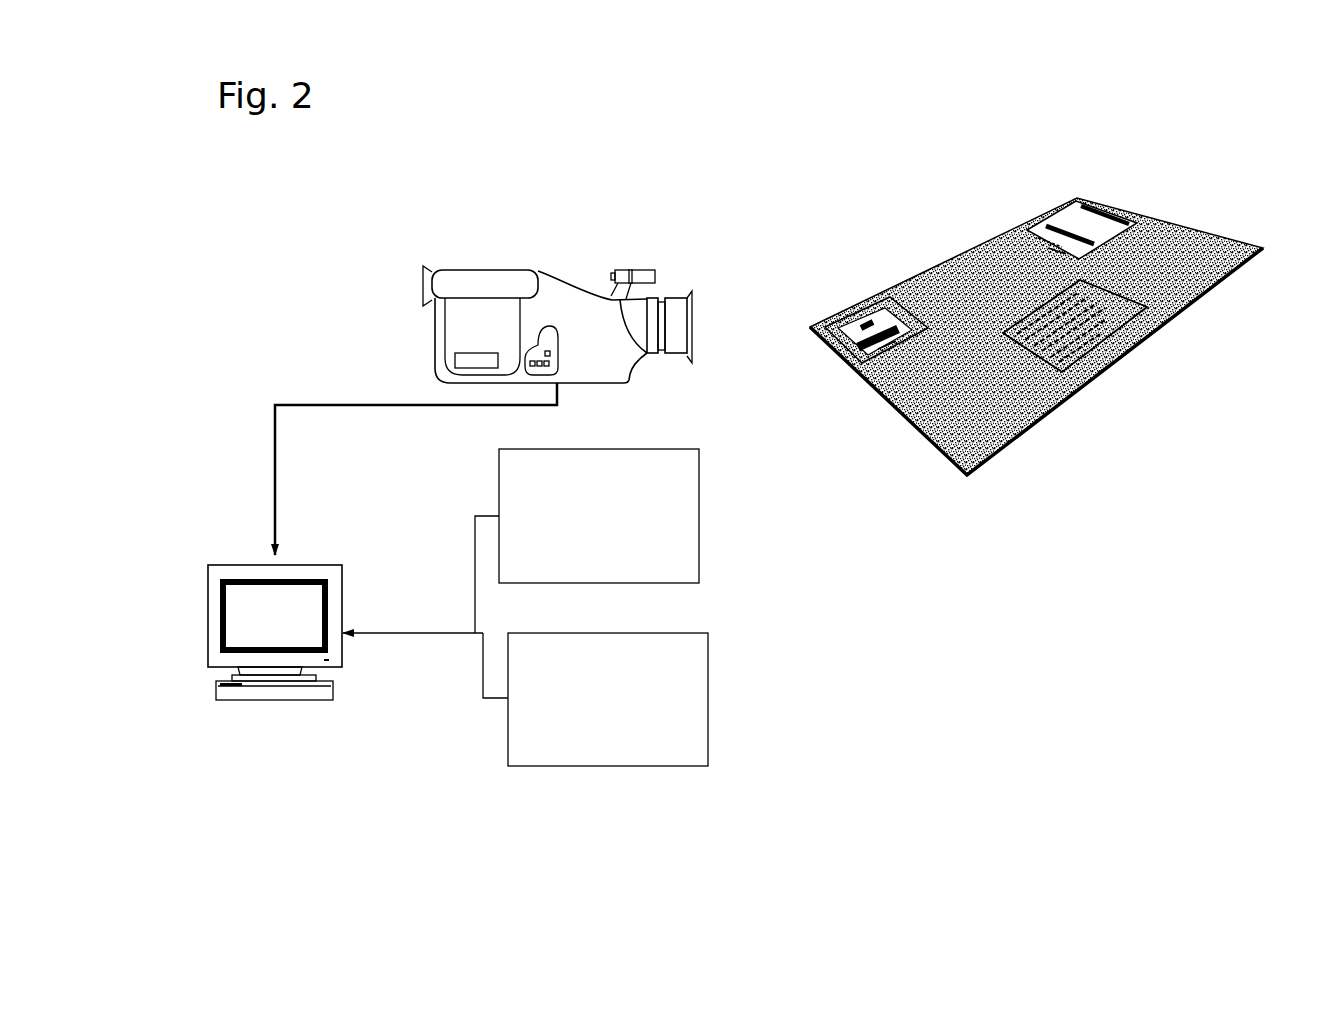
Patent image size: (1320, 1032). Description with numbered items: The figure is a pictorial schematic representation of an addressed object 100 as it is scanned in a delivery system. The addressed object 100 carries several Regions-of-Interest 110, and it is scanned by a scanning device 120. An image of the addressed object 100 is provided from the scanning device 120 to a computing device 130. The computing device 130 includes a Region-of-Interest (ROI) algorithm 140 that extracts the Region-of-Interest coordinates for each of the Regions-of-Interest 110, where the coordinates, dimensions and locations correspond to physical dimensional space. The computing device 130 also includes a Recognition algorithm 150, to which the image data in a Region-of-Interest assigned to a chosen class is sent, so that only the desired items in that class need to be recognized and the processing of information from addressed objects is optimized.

The addressed object 100 is at (922, 457).
The Regions-of-Interest 110 is at (1037, 313).
The scanning device 120 is at (457, 247).
The computing device 130 is at (243, 702).
The Region-of-Interest (ROI) algorithm 140 is at (624, 785).
The Recognition algorithm 150 is at (497, 480).